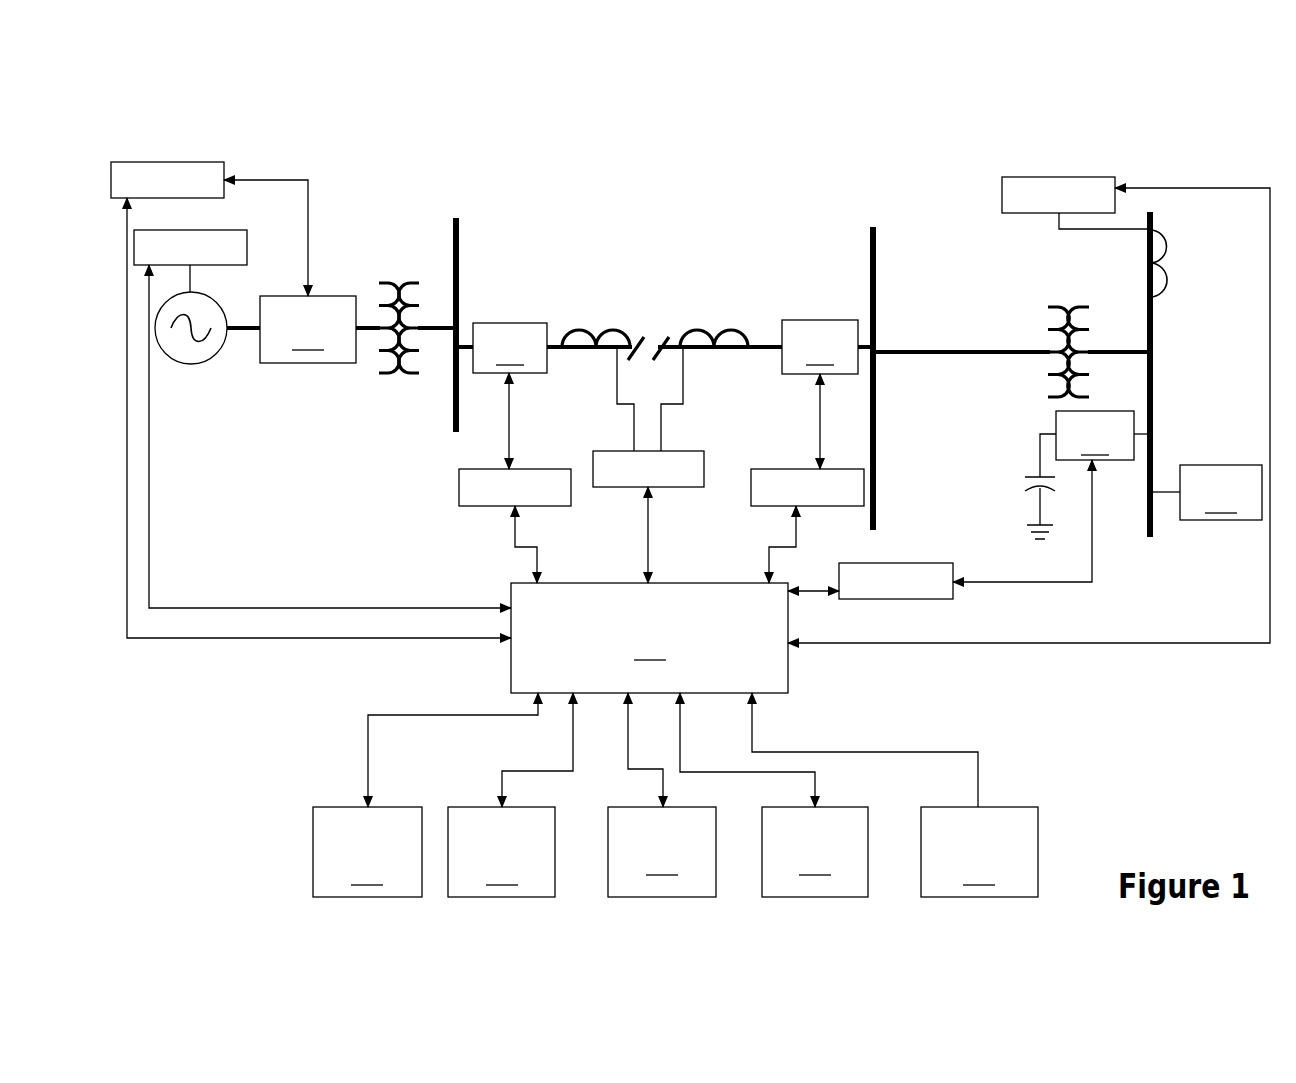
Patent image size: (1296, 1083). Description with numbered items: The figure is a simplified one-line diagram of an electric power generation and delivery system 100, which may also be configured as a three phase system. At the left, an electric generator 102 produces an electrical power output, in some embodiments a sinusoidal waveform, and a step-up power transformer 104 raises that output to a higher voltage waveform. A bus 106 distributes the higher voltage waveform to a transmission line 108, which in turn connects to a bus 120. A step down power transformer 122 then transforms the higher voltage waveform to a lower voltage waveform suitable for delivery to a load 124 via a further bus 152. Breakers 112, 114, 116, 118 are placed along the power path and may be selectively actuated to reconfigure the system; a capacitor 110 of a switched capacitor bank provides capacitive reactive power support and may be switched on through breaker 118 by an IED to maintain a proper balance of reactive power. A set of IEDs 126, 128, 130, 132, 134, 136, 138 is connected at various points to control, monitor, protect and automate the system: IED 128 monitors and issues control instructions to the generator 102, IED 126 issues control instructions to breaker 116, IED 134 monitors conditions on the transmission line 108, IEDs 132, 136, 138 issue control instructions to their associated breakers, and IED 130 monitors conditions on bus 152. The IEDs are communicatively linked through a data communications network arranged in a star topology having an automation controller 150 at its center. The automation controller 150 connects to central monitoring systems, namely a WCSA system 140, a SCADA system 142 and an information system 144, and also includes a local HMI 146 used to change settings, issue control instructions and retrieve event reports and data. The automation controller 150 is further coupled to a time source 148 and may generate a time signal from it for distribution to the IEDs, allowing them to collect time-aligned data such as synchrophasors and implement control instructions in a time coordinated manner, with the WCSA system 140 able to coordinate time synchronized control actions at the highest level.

The electric power generation and delivery system 100 is at (1110, 55).
The electric generator 102 is at (214, 298).
The step-up power transformer 104 is at (398, 380).
The bus 106 is at (452, 262).
The transmission line 108 is at (777, 345).
The capacitor 110 is at (1033, 472).
The breaker 112 is at (510, 348).
The breaker 114 is at (820, 347).
The breaker 116 is at (308, 329).
The breaker 118 is at (1095, 435).
The bus 120 is at (877, 362).
The step down power transformer 122 is at (1068, 300).
The load 124 is at (1221, 492).
The IED 126 is at (182, 162).
The IED 128 is at (225, 230).
The IED 130 is at (1115, 177).
The IED 132 is at (473, 506).
The IED 134 is at (632, 487).
The IED 136 is at (762, 506).
The IED 138 is at (910, 563).
The wide area control and situational awareness (WCSA) system 140 is at (367, 852).
The supervisory control and data acquisition (SCADA) system 142 is at (501, 852).
The information system (IS) 144 is at (662, 852).
The local human machine interface (HMI) 146 is at (815, 852).
The time source 148 is at (979, 852).
The automation controller 150 is at (649, 638).
The bus 152 is at (1153, 340).